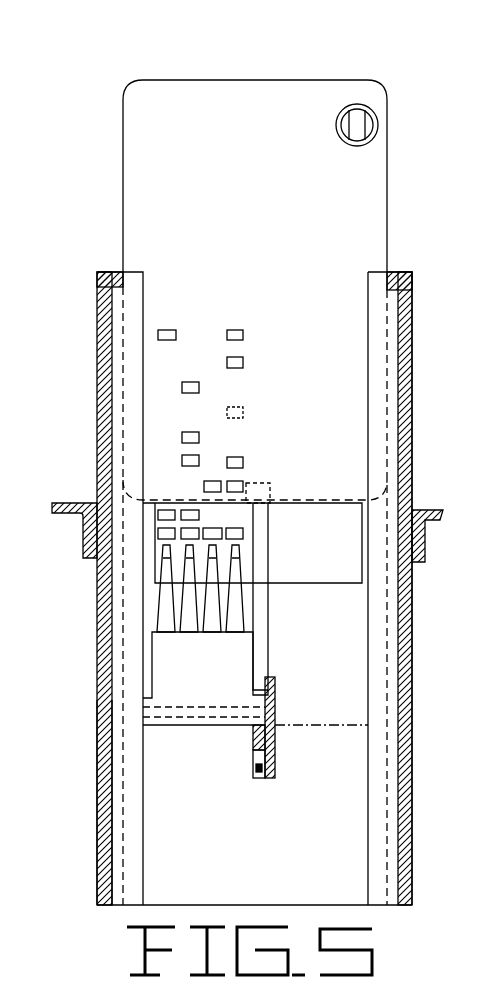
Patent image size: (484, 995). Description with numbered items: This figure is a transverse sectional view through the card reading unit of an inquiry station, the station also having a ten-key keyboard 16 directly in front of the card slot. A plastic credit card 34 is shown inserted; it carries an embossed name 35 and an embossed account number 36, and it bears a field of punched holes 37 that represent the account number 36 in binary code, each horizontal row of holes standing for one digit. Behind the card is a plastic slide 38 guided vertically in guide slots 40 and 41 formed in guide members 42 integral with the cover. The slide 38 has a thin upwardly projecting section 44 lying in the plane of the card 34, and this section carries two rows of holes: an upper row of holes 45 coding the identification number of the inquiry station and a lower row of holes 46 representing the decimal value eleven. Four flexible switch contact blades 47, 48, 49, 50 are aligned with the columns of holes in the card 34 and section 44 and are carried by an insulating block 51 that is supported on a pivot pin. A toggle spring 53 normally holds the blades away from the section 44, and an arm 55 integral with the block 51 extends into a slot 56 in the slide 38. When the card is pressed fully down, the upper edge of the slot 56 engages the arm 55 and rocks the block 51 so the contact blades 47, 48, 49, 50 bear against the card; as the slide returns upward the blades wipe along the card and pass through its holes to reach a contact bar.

The ten-key keyboard 16 is at (113, 283).
The credit card 34 is at (192, 80).
The name 35 is at (291, 112).
The account number 36 is at (325, 240).
The field of punched holes 37 is at (192, 413).
The slide 38 is at (332, 728).
The guide slot 40 is at (116, 627).
The guide slot 41 is at (386, 835).
The guide members 42 is at (104, 810).
The upwardly projecting section 44 is at (347, 515).
The upper row of holes 45 is at (199, 516).
The lower row of holes 46 is at (253, 535).
The switch contact blade 47 is at (236, 566).
The switch contact blade 48 is at (212, 592).
The switch contact blade 49 is at (190, 608).
The switch contact blade 50 is at (166, 600).
The block 51 is at (155, 677).
The toggle spring 53 is at (262, 768).
The arm 55 is at (265, 738).
The slot 56 is at (253, 683).